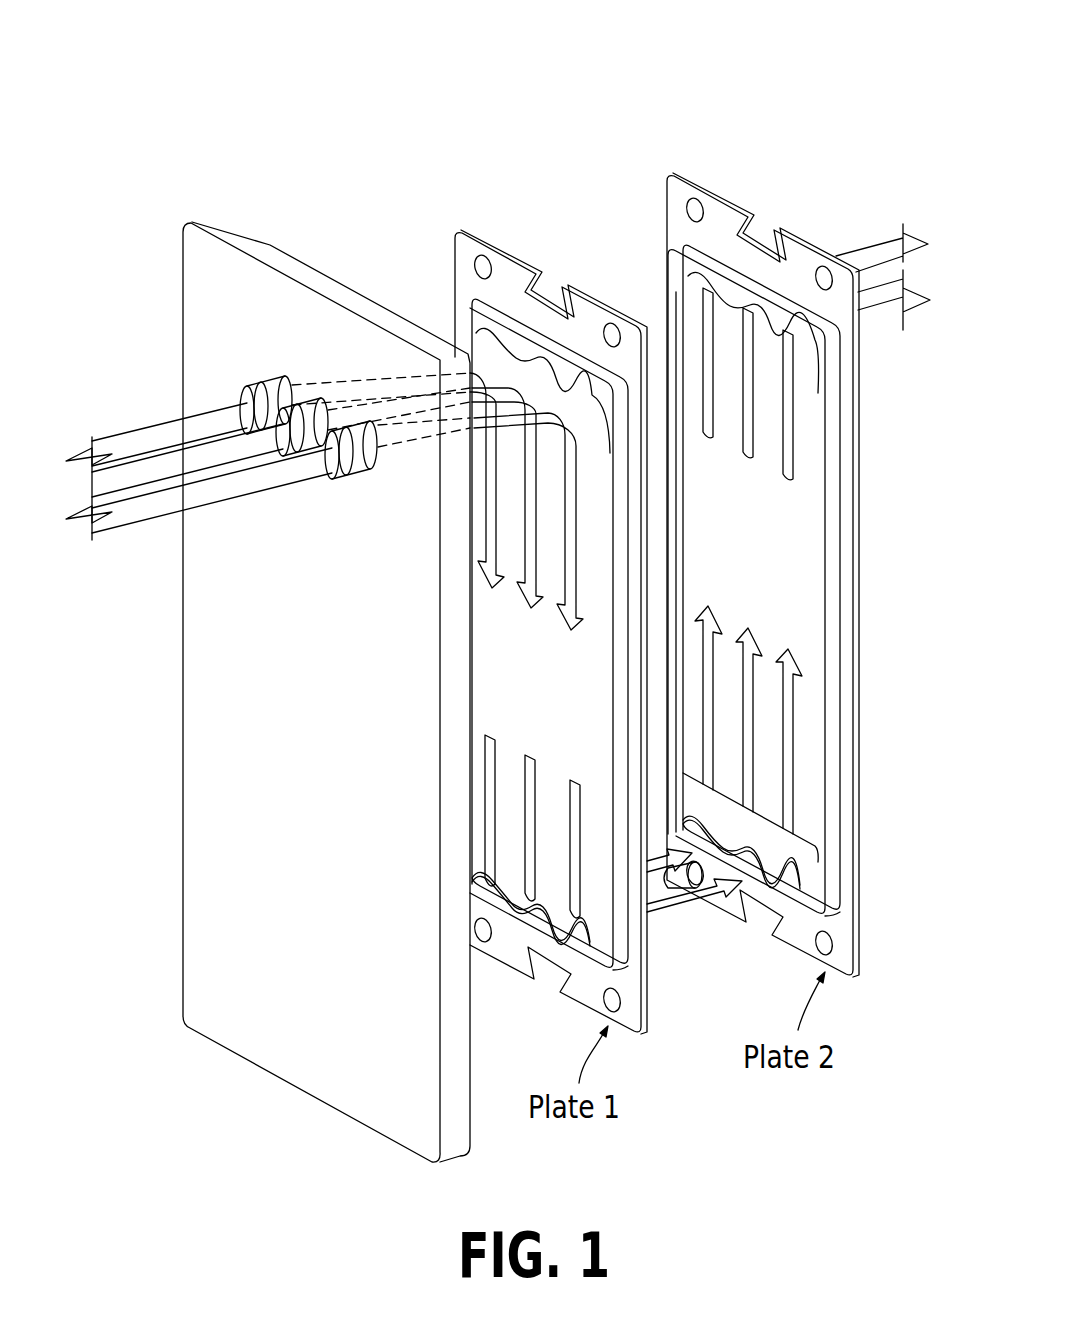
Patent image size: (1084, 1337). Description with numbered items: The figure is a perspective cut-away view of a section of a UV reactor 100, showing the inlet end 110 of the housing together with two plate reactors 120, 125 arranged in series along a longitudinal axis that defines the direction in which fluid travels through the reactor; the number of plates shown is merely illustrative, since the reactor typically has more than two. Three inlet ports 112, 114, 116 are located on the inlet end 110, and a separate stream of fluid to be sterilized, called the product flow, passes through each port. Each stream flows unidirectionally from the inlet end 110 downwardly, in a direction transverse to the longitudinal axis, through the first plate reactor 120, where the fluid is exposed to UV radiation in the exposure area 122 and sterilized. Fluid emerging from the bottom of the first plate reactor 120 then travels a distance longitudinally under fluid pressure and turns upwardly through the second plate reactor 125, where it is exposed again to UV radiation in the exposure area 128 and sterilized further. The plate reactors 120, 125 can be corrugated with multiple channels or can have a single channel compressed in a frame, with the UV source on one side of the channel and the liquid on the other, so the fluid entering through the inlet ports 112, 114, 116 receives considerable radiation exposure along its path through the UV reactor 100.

The UV reactor 100 is at (281, 106).
The inlet end of the housing 110 is at (320, 773).
The inlet port 112 is at (293, 383).
The inlet port 114 is at (336, 405).
The inlet port 116 is at (384, 428).
The first plate reactor 120 is at (615, 318).
The exposure area 122 is at (540, 682).
The second plate reactor 125 is at (768, 298).
The exposure area 128 is at (765, 570).